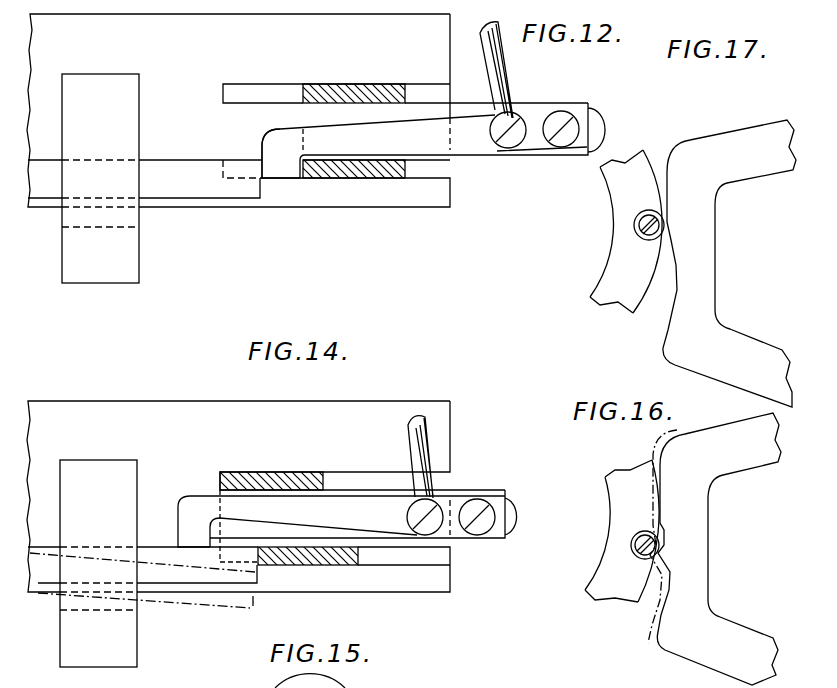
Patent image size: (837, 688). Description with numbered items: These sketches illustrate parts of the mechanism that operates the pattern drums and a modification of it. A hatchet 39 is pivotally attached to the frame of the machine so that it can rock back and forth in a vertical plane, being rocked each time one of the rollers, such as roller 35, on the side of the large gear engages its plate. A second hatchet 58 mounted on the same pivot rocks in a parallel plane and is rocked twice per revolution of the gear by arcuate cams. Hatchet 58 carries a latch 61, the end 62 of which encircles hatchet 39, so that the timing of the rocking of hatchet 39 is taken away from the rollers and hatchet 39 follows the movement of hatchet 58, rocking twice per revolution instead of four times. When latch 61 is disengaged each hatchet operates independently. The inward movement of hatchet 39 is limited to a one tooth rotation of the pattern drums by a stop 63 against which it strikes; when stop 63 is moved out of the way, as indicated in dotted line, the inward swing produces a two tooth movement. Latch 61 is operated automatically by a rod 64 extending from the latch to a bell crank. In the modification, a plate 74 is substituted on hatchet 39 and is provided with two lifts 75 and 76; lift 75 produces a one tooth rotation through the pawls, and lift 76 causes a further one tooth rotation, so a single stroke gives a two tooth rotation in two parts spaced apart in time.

In FIG. 17, the roller 35 is at (641, 241).
In FIG. 16, the roller 35 is at (640, 556).
In FIG. 12, the hatchet 39 is at (372, 182).
In FIG. 14, the hatchet 39 is at (325, 560).
In FIG. 12, the second hatchet 58 is at (390, 84).
In FIG. 14, the second hatchet 58 is at (293, 472).
In FIG. 12, the latch 61 is at (433, 140).
In FIG. 14, the latch 61 is at (353, 514).
In FIG. 12, the end of latch 62 is at (279, 170).
In FIG. 14, the end of latch 62 is at (192, 541).
In FIG. 12, the stop 63 is at (186, 170).
In FIG. 14, the stop 63 is at (163, 557).
In FIG. 12, the rod 64 is at (515, 77).
In FIG. 14, the rod 64 is at (437, 444).
In FIG. 17, the plate 74 is at (738, 137).
In FIG. 16, the plate 74 is at (740, 640).
In FIG. 16, the lift 75 is at (660, 552).
In FIG. 17, the lift 76 is at (670, 222).